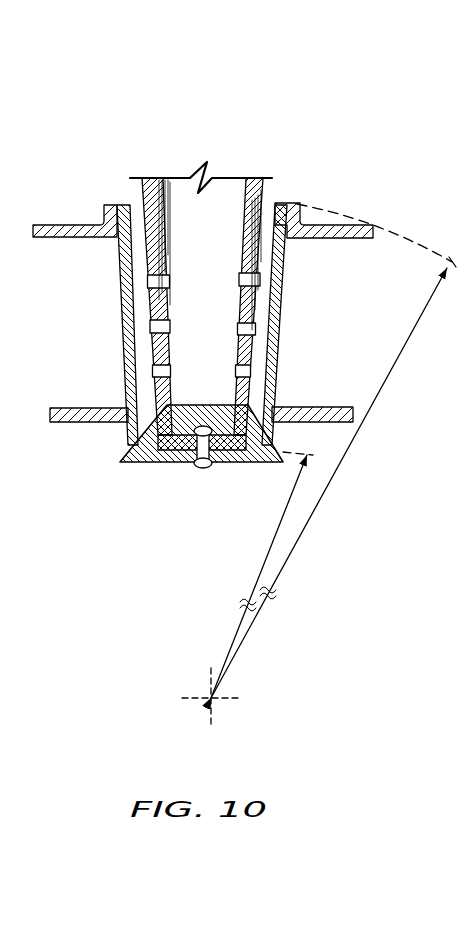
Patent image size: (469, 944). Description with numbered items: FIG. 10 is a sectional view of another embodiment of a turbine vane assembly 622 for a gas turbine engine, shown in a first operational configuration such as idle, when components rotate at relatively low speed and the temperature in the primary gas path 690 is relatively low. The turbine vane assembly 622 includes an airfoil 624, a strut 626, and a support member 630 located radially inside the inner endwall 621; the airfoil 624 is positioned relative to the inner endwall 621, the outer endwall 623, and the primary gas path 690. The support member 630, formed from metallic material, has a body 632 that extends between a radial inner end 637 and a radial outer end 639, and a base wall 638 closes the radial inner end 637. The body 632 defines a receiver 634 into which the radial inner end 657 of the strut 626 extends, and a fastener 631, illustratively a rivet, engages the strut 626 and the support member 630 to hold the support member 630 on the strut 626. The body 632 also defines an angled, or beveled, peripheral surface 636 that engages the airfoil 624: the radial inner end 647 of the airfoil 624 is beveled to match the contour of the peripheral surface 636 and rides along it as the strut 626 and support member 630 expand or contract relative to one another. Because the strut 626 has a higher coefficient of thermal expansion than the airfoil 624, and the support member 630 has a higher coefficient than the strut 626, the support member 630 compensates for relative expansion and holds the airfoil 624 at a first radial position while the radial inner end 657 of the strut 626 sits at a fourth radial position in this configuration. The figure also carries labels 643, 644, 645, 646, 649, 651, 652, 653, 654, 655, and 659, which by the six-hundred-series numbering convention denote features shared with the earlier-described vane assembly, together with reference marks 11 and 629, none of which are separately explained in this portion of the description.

The rotational axis 11 is at (211, 698).
The inner endwall 621 is at (57, 428).
The turbine vane assembly 622 is at (124, 112).
The outer endwall 623 is at (51, 219).
The airfoil 624 is at (115, 298).
The strut 626 is at (177, 196).
The reference circle 629 is at (335, 451).
The support member 630 is at (117, 466).
The fastener 631 is at (192, 456).
The body 632 is at (288, 466).
The receiver 634 is at (170, 410).
The angled peripheral surface 636 is at (283, 452).
The radial inner end 637 is at (128, 467).
The base wall 638 is at (240, 467).
The radial outer end 639 is at (150, 410).
The sleeve end wall 643 is at (247, 407).
The second outer tube 644 is at (283, 302).
The plate collar 645 is at (264, 258).
The tube outer surface 646 is at (118, 256).
The radial inner end of the airfoil 647 is at (277, 405).
The annular gap 649 is at (284, 224).
The sleeve outer surface 651 is at (150, 383).
The sleeve flange gap 652 is at (134, 222).
The seal groove 653 is at (170, 380).
The seal grooves 654 is at (243, 323).
The inner chamber 655 is at (228, 257).
The radial inner end of the strut 657 is at (215, 467).
The lid 659 is at (259, 176).
The primary gas path 690 is at (335, 347).